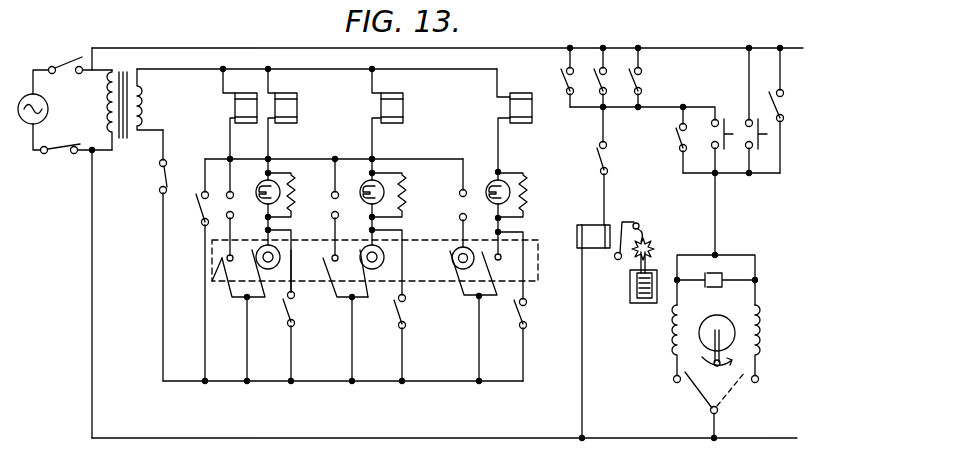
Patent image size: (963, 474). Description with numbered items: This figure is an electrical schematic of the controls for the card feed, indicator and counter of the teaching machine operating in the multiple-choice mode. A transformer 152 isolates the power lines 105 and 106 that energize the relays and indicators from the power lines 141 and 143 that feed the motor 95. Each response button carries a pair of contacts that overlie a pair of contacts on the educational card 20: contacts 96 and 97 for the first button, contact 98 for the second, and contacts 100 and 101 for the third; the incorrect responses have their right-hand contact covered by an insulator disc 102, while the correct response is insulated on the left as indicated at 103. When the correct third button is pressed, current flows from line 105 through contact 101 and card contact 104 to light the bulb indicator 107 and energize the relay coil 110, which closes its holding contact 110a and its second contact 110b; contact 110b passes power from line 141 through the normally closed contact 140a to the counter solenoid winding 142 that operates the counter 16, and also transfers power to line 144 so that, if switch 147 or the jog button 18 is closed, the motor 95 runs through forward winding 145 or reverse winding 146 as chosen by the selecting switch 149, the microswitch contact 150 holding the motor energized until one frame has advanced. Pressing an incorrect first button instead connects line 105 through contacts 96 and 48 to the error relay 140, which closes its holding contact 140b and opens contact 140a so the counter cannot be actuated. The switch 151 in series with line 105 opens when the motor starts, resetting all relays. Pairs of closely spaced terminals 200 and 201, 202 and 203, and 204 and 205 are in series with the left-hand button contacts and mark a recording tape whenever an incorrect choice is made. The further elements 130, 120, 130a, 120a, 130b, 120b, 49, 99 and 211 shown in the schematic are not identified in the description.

The transformer 152 is at (130, 70).
The power line 106 is at (488, 66).
The error relay 140 is at (234, 107).
The relay coil 130 is at (292, 101).
The relay coil 120 is at (402, 103).
The relay coil 110 is at (518, 93).
The relay contact 140b is at (198, 204).
The switch 151 is at (159, 176).
The terminal 200 is at (233, 192).
The terminal 201 is at (232, 214).
The card contact 48 is at (224, 252).
The insulator disc 102 is at (292, 232).
The contact conductor 49 is at (292, 255).
The relay contact 130a is at (284, 305).
The electrical contact 97 is at (240, 298).
The electrical contact 96 is at (212, 284).
The terminal 202 is at (332, 193).
The terminal 203 is at (352, 219).
The relay contact 120a is at (404, 318).
The contact 98 is at (330, 298).
The switch blade 99 is at (368, 299).
The terminal 204 is at (460, 193).
The terminal 205 is at (461, 216).
The insulated contact 103 is at (451, 255).
The light bulb indicator 107 is at (502, 177).
The card contact 104 is at (502, 256).
The holding contact 110a is at (513, 318).
The electrical contact 100 is at (458, 290).
The electrical contact 101 is at (477, 299).
The educational card 20 is at (212, 258).
The power line 105 is at (402, 384).
The relay contact 130b is at (560, 72).
The relay contact 120b is at (592, 65).
The relay contact 110b is at (637, 82).
The line 144 is at (694, 106).
The power line 141 is at (680, 52).
The normally closed relay contact 140a is at (606, 160).
The counter solenoid winding 142 is at (586, 224).
The switch 147 is at (672, 145).
The jog button 18 is at (722, 126).
The microswitch contact 150 is at (770, 96).
The conductor 211 is at (749, 176).
The motor drive winding 145 is at (676, 332).
The motor drive winding 146 is at (758, 325).
The electric motor 95 is at (714, 315).
The selecting switch 149 is at (705, 395).
The counter mechanism 16 is at (633, 300).
The power line 143 is at (588, 441).